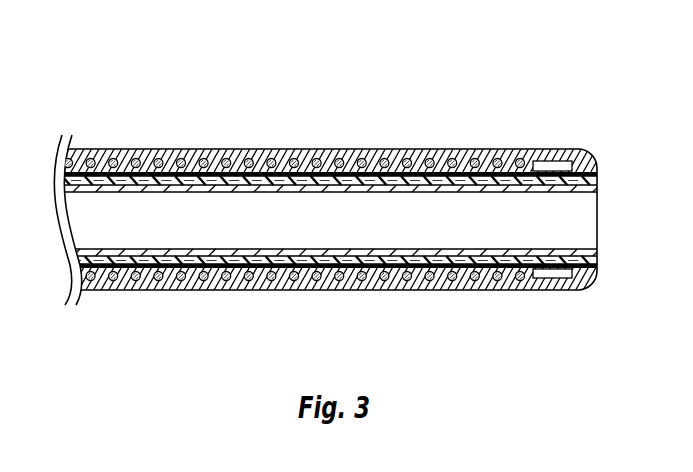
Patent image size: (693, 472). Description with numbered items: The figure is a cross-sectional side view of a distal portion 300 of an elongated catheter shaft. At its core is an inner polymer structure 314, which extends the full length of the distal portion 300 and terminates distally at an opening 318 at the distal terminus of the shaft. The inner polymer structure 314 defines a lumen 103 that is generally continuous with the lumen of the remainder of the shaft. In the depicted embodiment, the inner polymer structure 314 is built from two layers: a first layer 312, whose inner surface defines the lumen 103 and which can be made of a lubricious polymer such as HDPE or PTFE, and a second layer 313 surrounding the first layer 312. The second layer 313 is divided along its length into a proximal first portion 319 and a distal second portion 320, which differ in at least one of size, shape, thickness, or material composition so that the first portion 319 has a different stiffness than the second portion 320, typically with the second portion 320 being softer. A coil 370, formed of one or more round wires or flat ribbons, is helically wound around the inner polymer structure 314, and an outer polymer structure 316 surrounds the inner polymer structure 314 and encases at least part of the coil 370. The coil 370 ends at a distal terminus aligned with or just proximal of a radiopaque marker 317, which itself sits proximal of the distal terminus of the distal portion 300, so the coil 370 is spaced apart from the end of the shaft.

The distal portion 300 is at (112, 100).
The lumen 103 is at (337, 228).
The first layer 312 is at (485, 187).
The second layer 313 is at (350, 178).
The inner polymer structure 314 is at (599, 171).
The outer polymer structure 316 is at (175, 283).
The radiopaque marker 317 is at (555, 166).
The opening 318 is at (603, 228).
The first portion 319 is at (215, 178).
The second portion 320 is at (462, 160).
The coil 370 is at (458, 290).